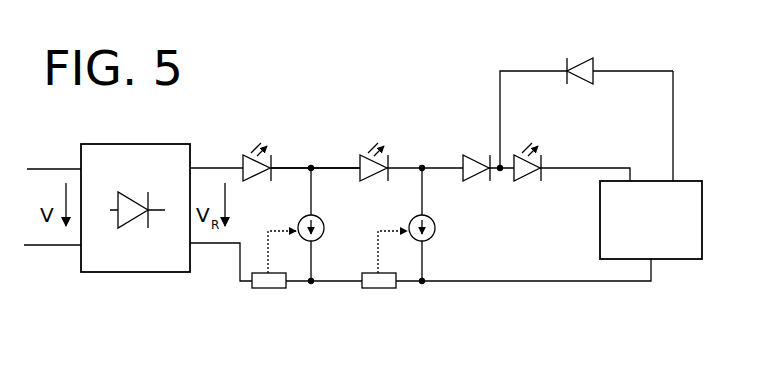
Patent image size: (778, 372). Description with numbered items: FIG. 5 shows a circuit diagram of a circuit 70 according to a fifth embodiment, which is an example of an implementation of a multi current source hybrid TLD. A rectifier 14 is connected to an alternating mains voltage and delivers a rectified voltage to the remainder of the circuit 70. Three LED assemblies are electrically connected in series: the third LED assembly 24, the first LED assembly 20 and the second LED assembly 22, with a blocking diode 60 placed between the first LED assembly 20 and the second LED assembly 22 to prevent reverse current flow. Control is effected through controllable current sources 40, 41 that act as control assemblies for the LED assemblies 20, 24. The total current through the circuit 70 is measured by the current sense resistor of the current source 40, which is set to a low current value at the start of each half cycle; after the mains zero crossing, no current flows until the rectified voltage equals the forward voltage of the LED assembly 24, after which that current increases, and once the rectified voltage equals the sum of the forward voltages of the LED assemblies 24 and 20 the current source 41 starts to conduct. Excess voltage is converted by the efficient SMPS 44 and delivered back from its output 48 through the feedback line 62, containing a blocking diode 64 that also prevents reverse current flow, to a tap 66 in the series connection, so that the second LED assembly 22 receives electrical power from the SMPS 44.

The rectifier 14 is at (133, 144).
The third LED assembly 24 is at (250, 154).
The first LED assembly 20 is at (366, 154).
The circuit 70 is at (329, 100).
The controllable current source 40 is at (325, 228).
The controllable current source 41 is at (436, 235).
The blocking diode 60 is at (470, 154).
The tap 66 is at (500, 172).
The second LED assembly 22 is at (532, 180).
The feedback line 62 is at (652, 71).
The blocking diode 64 is at (578, 58).
The output 48 is at (675, 180).
The SMPS 44 is at (651, 220).